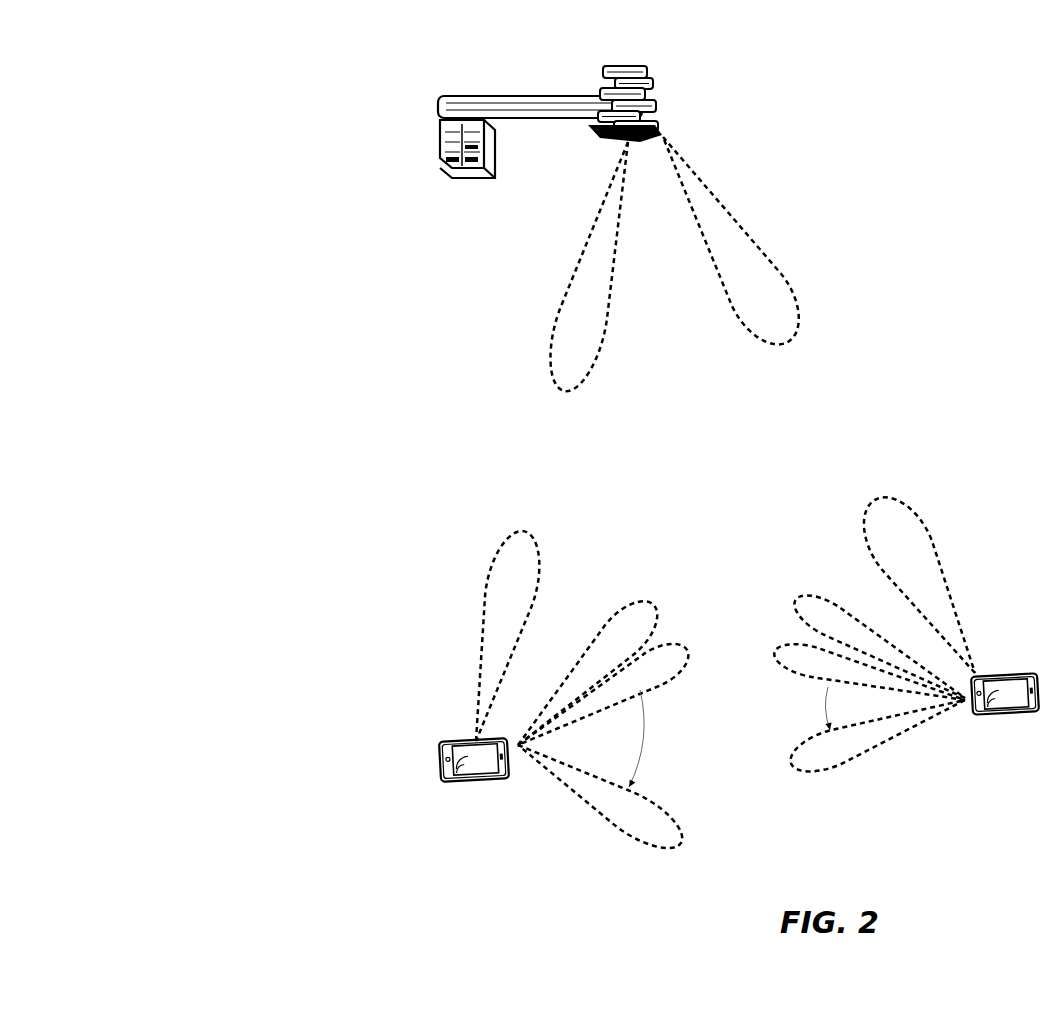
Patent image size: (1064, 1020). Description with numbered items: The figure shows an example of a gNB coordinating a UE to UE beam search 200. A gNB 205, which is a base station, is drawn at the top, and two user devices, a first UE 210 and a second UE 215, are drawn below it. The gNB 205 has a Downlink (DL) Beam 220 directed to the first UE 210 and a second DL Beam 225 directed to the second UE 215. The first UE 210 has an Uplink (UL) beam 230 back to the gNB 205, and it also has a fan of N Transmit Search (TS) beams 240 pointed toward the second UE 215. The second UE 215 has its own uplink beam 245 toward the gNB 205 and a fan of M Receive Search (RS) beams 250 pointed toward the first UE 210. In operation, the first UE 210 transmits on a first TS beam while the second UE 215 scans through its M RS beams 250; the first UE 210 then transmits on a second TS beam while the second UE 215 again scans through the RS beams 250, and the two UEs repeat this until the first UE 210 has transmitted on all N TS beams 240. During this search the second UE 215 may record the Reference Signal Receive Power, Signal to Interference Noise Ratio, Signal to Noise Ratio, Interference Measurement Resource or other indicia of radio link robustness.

The gNB coordinating a UE to UE beam search 200 is at (222, 57).
The gNB 205 is at (437, 135).
The first UE 210 is at (462, 783).
The second UE 215 is at (1005, 718).
The Downlink (DL) Beam 220 is at (558, 320).
The DL Beam 225 is at (727, 297).
The Uplink (UL) beam 230 is at (527, 532).
The Transmit Search (TS) beams 240 is at (642, 842).
The uplink beam from UE2 to gNB 245 is at (923, 527).
The Receive Search (RS) beams 250 is at (840, 772).